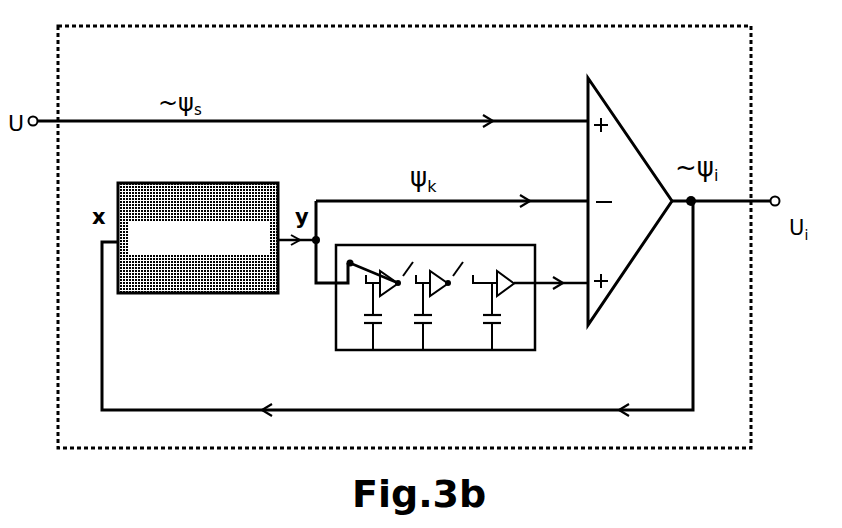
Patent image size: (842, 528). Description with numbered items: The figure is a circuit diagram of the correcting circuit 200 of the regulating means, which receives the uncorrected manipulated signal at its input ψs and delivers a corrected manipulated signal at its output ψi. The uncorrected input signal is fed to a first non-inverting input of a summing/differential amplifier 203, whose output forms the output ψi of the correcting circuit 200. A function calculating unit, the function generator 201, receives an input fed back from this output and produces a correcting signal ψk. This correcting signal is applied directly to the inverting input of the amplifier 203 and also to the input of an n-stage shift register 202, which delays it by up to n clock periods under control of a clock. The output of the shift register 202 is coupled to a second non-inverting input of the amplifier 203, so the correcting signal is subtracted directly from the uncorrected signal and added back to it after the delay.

The correcting circuit 200 is at (413, 71).
The function generator 201 is at (198, 253).
The n-stage shift register 202 is at (462, 314).
The summing/differential amplifier 203 is at (630, 201).